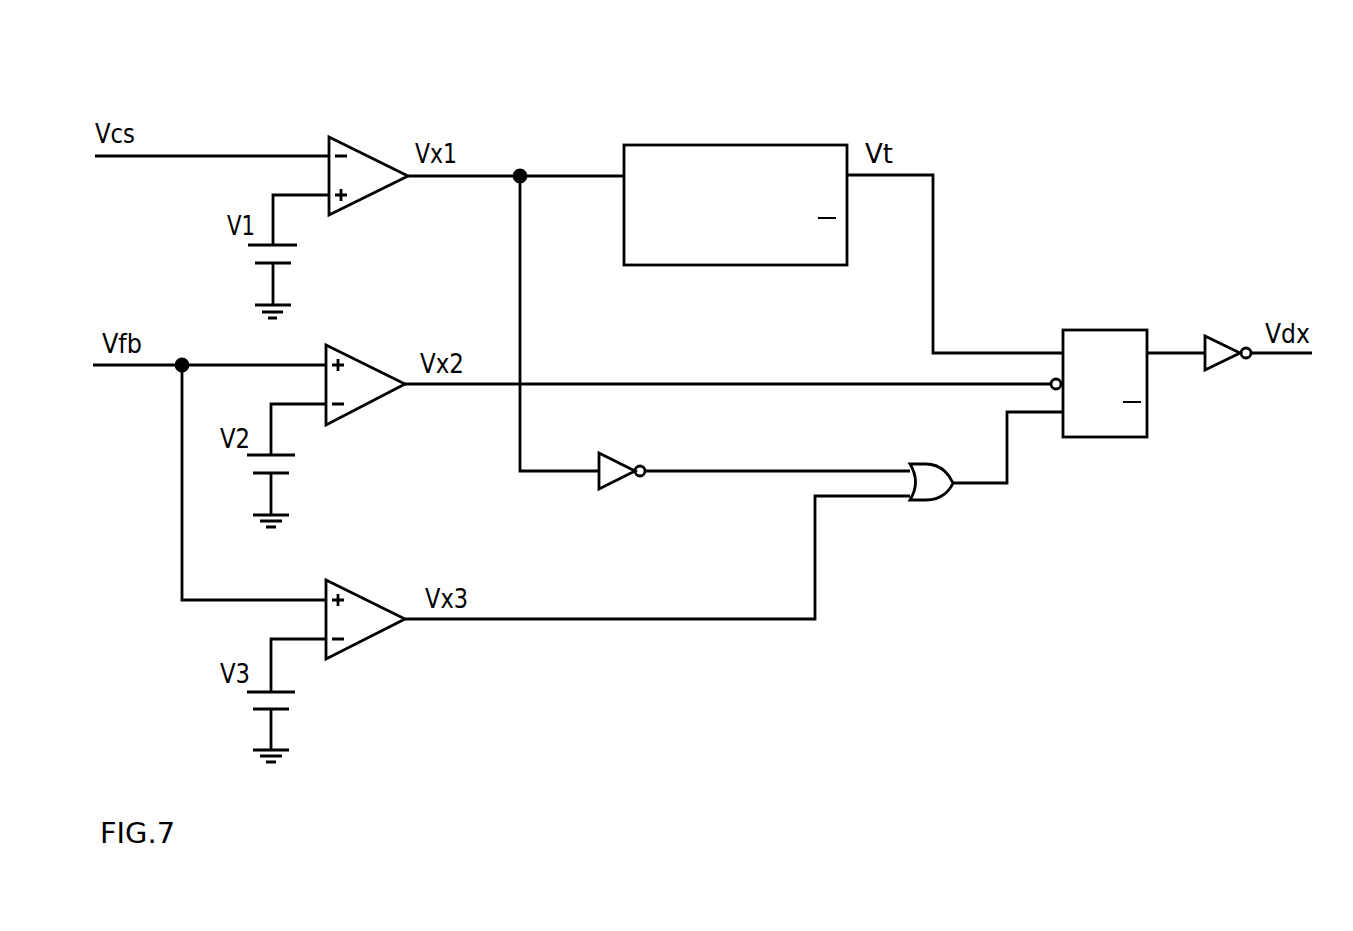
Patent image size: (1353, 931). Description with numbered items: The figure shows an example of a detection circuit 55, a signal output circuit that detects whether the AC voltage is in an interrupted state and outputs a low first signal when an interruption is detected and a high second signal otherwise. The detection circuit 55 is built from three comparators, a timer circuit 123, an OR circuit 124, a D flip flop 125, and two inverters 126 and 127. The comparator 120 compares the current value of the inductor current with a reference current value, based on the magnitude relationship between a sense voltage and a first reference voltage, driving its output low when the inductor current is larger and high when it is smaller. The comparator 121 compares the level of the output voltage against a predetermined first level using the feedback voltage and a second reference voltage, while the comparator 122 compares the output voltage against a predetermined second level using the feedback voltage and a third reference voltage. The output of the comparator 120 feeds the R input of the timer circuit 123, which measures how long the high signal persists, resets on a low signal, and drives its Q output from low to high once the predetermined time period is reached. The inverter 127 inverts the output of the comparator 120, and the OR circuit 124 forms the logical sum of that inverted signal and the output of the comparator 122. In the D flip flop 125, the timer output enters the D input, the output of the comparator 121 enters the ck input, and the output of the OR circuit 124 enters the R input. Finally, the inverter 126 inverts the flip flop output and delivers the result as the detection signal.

The detection circuit 55 is at (1045, 100).
The comparator 120 is at (333, 137).
The comparator 121 is at (333, 345).
The comparator 122 is at (333, 580).
The timer circuit 123 is at (624, 145).
The OR circuit 124 is at (913, 463).
The D flip flop 125 is at (1065, 330).
The inverter 126 is at (1206, 336).
The inverter 127 is at (602, 453).